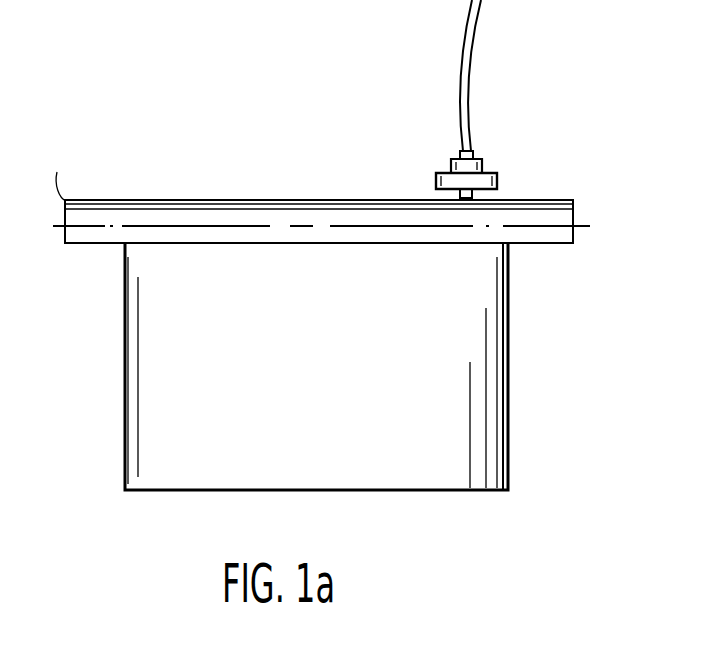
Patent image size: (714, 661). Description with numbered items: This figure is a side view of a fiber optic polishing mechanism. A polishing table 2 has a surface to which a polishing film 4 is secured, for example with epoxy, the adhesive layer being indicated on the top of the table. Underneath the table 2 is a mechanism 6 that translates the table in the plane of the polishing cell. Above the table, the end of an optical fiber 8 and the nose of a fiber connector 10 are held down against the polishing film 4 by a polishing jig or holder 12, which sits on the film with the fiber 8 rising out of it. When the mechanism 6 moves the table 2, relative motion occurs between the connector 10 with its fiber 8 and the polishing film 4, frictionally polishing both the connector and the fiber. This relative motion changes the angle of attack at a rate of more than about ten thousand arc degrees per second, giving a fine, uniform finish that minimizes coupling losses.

The polishing table 2 is at (574, 238).
The polishing film 4 is at (560, 199).
The mechanism 6 is at (510, 343).
The optical fiber 8 is at (468, 52).
The fiber connector 10 is at (482, 165).
The polishing jig or holder 12 is at (497, 182).